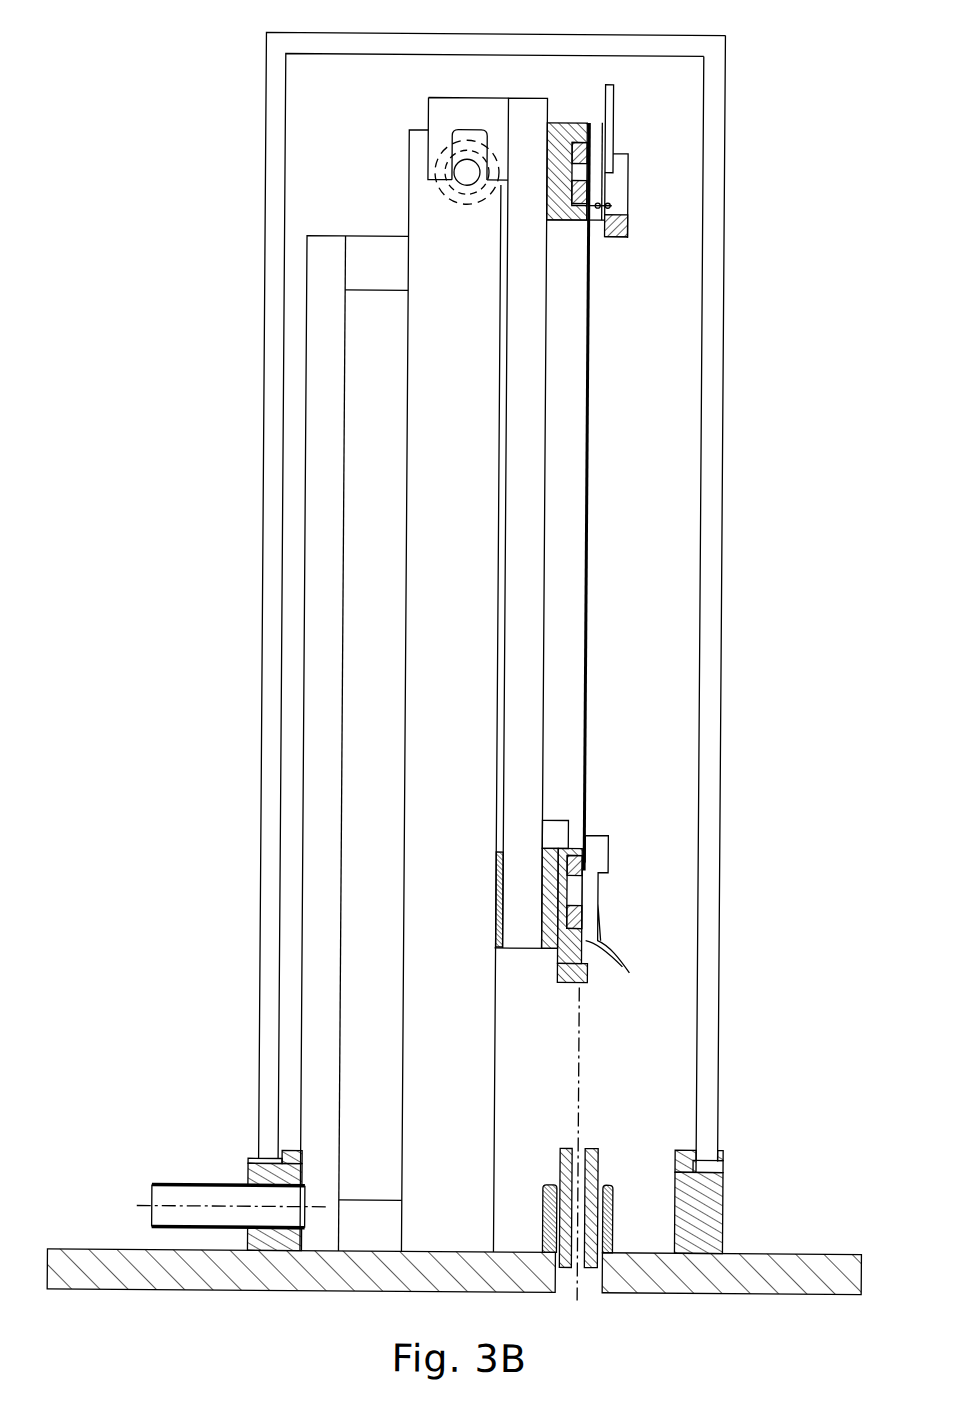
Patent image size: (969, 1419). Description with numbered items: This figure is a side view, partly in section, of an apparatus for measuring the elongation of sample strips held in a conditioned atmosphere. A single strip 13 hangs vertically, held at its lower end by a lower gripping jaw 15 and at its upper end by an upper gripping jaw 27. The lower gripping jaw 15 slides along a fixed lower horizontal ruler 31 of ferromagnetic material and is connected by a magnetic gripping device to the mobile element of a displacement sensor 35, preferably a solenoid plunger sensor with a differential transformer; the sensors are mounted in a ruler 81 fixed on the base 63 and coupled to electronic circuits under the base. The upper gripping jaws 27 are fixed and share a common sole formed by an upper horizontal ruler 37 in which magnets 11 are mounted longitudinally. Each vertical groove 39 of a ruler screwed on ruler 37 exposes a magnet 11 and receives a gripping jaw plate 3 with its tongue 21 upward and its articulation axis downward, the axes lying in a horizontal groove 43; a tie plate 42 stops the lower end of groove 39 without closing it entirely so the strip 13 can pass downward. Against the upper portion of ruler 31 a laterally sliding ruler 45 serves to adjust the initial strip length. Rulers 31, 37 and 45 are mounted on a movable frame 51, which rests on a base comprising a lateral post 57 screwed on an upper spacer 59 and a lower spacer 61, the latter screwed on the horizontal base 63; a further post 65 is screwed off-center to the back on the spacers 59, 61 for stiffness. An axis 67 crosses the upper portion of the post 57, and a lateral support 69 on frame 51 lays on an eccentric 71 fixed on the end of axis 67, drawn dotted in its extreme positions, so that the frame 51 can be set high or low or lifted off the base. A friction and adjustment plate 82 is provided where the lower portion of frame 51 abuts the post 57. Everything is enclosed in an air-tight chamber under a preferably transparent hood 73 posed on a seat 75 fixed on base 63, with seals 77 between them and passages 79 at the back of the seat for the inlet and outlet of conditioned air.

The gripping jaw plate 3 is at (594, 184).
The magnet 11 is at (616, 140).
The strip 13 is at (588, 488).
The lower gripping jaw 15 is at (622, 880).
The tongue 21 is at (608, 84).
The upper gripping jaw 27 is at (670, 82).
The lower horizontal ruler 31 is at (551, 963).
The displacement sensor 35 is at (588, 1145).
The upper horizontal ruler 37 is at (571, 230).
The vertical groove 39 is at (631, 242).
The tie plate 42 is at (618, 242).
The horizontal groove 43 is at (609, 206).
The laterally sliding ruler 45 is at (560, 826).
The frame 51 is at (523, 627).
The lateral post 57 is at (463, 734).
The upper spacer 59 is at (365, 254).
The lower spacer 61 is at (394, 1223).
The horizontal base 63 is at (817, 1260).
The post 65 is at (322, 548).
The axis 67 is at (460, 176).
The lateral support 69 is at (439, 112).
The eccentric 71 is at (482, 208).
The hood 73 is at (716, 468).
The seat 75 is at (721, 1196).
The seal 77 is at (722, 1158).
The passage 79 is at (172, 1199).
The ruler 81 is at (611, 1185).
The friction and adjustment plate 82 is at (498, 902).